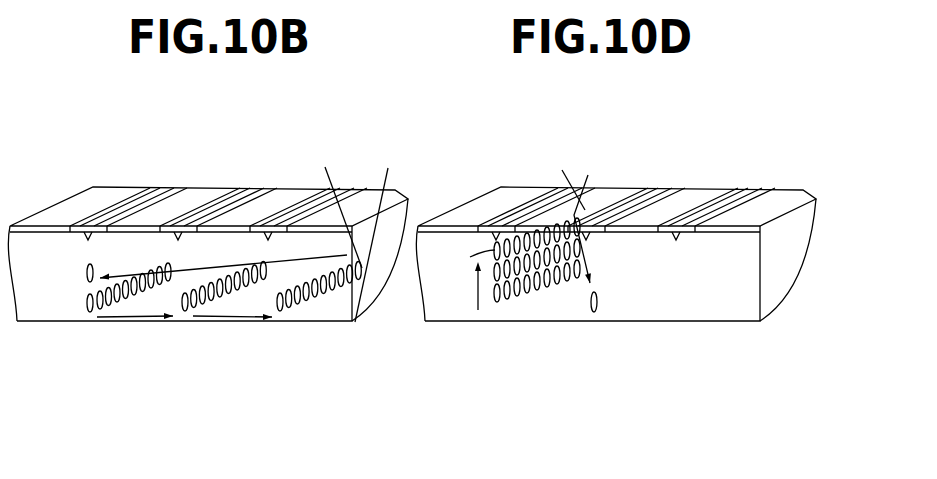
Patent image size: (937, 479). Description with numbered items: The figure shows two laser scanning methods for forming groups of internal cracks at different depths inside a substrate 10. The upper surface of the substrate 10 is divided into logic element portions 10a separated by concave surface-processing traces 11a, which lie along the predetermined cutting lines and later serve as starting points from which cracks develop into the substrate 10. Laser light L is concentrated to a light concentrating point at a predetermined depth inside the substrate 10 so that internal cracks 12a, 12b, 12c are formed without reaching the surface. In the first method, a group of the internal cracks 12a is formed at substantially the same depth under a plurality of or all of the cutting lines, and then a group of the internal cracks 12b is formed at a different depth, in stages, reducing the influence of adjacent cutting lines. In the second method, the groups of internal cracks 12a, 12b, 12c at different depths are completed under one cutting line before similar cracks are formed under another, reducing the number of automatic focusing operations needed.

In FIG. 10B, the substrate 10 is at (363, 307).
In FIG. 10D, the substrate 10 is at (770, 300).
In FIG. 10B, the logic element portion 10a is at (100, 197).
In FIG. 10D, the logic element portion 10a is at (493, 200).
In FIG. 10B, the surface-processing trace 11a is at (143, 200).
In FIG. 10D, the surface-processing trace 11a is at (536, 190).
In FIG. 10B, the internal crack 12a is at (88, 302).
In FIG. 10D, the internal crack 12a is at (507, 300).
In FIG. 10B, the internal crack 12b is at (88, 276).
In FIG. 10D, the internal crack 12b is at (495, 285).
In FIG. 10D, the internal crack 12c is at (470, 257).
In FIG. 10B, the laser light L is at (387, 168).
In FIG. 10D, the laser light L is at (588, 175).